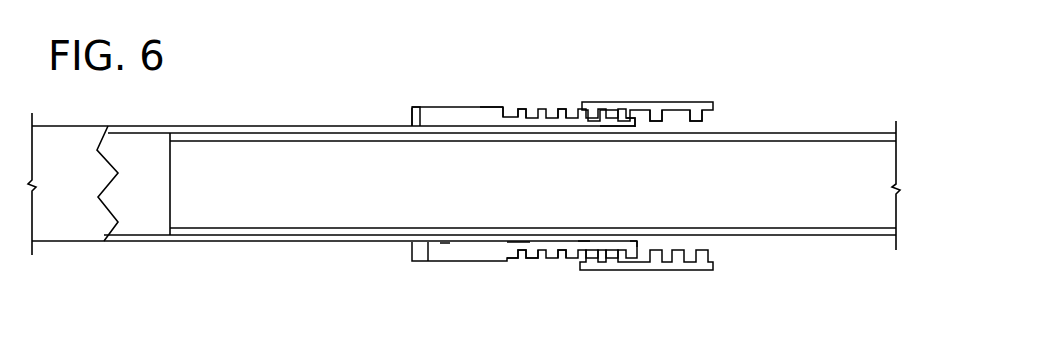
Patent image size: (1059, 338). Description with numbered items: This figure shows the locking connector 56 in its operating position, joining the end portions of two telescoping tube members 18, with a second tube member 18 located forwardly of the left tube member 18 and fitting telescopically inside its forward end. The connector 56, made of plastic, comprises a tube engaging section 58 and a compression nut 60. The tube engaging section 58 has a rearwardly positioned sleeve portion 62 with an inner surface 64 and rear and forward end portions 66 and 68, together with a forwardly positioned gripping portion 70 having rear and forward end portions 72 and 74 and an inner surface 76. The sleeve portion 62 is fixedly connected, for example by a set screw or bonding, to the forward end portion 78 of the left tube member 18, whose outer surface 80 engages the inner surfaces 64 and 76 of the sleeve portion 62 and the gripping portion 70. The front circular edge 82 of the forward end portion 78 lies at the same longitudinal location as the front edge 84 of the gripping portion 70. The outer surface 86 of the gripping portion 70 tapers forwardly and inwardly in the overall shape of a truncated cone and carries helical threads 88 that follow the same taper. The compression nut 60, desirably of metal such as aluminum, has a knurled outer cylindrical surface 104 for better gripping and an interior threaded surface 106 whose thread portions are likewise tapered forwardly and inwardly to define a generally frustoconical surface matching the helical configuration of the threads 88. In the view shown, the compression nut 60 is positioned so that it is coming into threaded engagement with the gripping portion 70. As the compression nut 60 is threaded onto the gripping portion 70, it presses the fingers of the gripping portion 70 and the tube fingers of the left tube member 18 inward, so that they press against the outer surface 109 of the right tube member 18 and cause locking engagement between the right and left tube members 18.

The tube member 18 is at (143, 128).
The locking connector 56 is at (548, 93).
The tube engaging section 58 is at (438, 104).
The compression nut 60 is at (713, 110).
The sleeve portion 62 is at (430, 117).
The inner surface 64 is at (486, 126).
The rear end portion 66 is at (420, 118).
The forward end portion 68 is at (503, 117).
The gripping portion 70 is at (562, 120).
The rear end portion 72 is at (518, 120).
The forward end portion 74 is at (634, 120).
The inner surface 76 is at (613, 128).
The forward end portion 78 is at (421, 242).
The outer surface 80 is at (428, 262).
The front circular edge 82 is at (637, 242).
The front edge 84 is at (640, 247).
The outer surface 86 is at (563, 258).
The helical threads 88 is at (537, 259).
The outer cylindrical surface 104 is at (683, 102).
The interior threaded surface 106 is at (684, 121).
The outer surface 109 is at (583, 238).